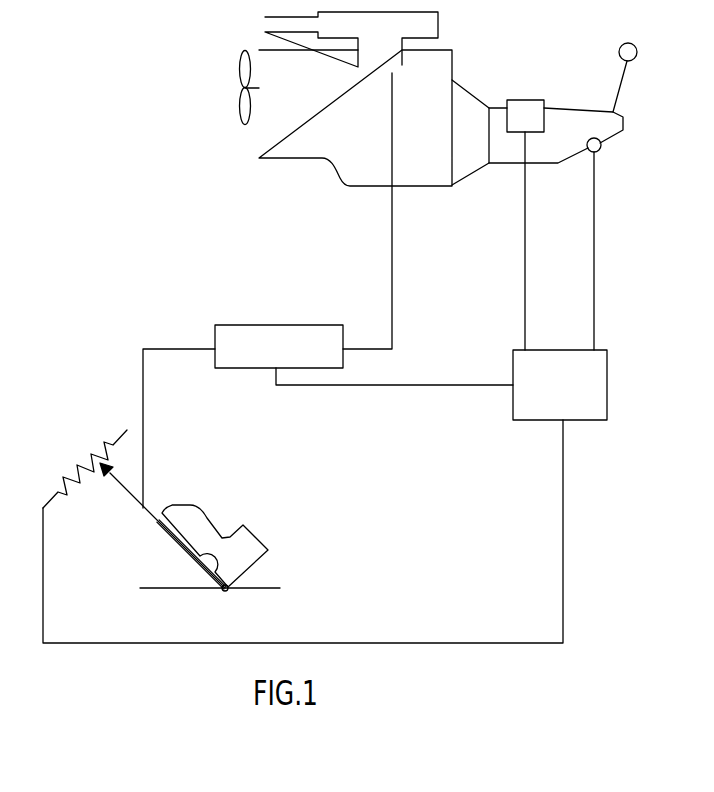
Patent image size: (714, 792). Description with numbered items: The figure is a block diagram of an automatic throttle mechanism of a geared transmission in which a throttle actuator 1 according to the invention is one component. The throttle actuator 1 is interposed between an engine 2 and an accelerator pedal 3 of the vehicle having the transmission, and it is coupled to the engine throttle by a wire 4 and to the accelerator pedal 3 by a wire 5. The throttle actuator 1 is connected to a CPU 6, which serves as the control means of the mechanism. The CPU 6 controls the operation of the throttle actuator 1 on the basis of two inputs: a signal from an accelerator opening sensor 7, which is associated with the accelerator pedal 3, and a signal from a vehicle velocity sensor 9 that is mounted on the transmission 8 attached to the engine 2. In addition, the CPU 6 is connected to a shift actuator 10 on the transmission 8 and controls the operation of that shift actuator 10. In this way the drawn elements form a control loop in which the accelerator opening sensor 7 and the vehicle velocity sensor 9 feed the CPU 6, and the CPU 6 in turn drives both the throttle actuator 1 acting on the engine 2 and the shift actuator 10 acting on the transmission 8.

The throttle actuator 1 is at (266, 325).
The engine 2 is at (285, 152).
The accelerator pedal 3 is at (158, 523).
The wire 4 is at (392, 225).
The wire 5 is at (143, 370).
The CPU 6 is at (608, 383).
The accelerator opening sensor 7 is at (83, 452).
The transmission 8 is at (565, 107).
The vehicle velocity sensor 9 is at (600, 150).
The shift actuator 10 is at (522, 100).